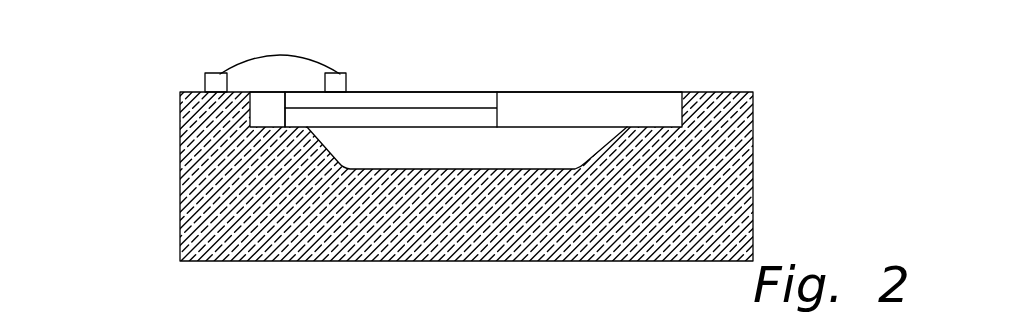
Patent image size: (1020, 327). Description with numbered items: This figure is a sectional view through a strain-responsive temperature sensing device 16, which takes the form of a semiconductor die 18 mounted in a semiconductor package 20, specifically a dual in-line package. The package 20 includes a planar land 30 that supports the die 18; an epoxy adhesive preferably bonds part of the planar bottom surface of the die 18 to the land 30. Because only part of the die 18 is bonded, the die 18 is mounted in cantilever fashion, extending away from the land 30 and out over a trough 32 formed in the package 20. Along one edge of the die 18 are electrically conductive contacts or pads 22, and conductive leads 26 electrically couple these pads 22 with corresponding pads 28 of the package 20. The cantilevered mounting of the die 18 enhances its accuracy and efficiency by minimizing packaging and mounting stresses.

The strain-responsive temperature sensing device 16 is at (128, 108).
The semiconductor die 18 is at (480, 92).
The semiconductor package 20 is at (753, 155).
The pads 22 is at (346, 77).
The conductive leads 26 is at (277, 53).
The pads of package 28 is at (205, 80).
The planar land 30 is at (271, 127).
The trough 32 is at (508, 168).